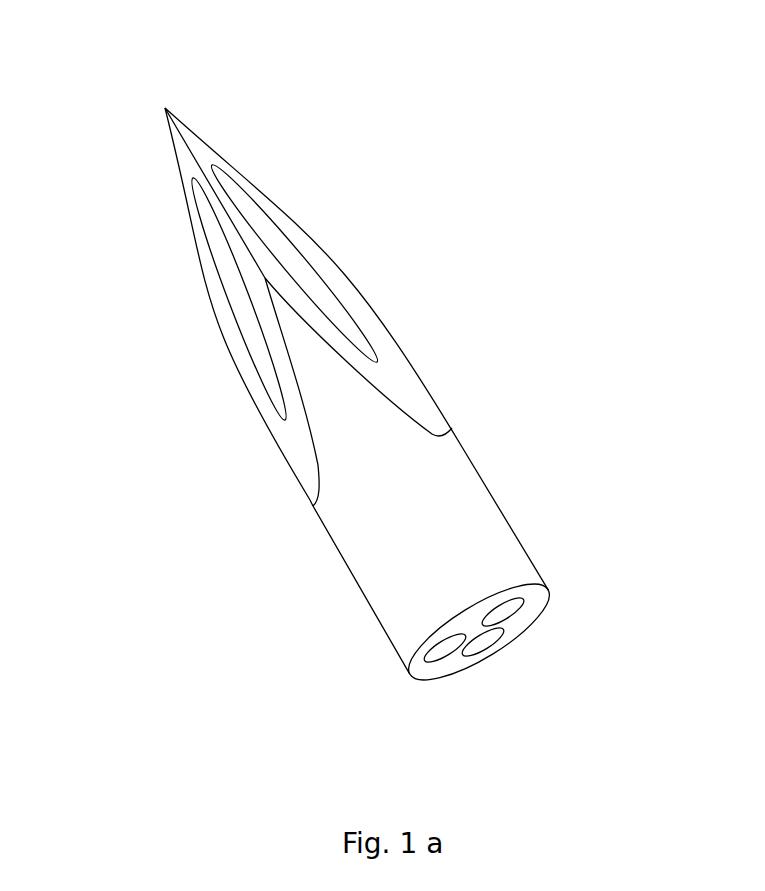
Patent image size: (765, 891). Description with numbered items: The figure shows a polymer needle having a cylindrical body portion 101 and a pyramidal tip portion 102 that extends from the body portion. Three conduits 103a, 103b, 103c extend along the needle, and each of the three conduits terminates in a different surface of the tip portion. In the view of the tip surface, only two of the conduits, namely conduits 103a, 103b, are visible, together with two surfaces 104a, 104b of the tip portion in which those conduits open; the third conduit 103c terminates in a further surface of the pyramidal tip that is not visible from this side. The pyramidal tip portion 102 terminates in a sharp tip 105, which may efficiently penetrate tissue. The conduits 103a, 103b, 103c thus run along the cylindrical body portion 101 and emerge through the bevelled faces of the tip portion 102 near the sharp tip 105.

The cylindrical body portion 101 is at (453, 527).
The pyramidal tip portion 102 is at (327, 398).
The conduit 103a is at (215, 217).
The conduit 103b is at (268, 228).
The conduit 103c is at (487, 643).
The surface of the tip portion 104a is at (297, 447).
The surface of the tip portion 104b is at (382, 340).
The sharp tip 105 is at (165, 108).